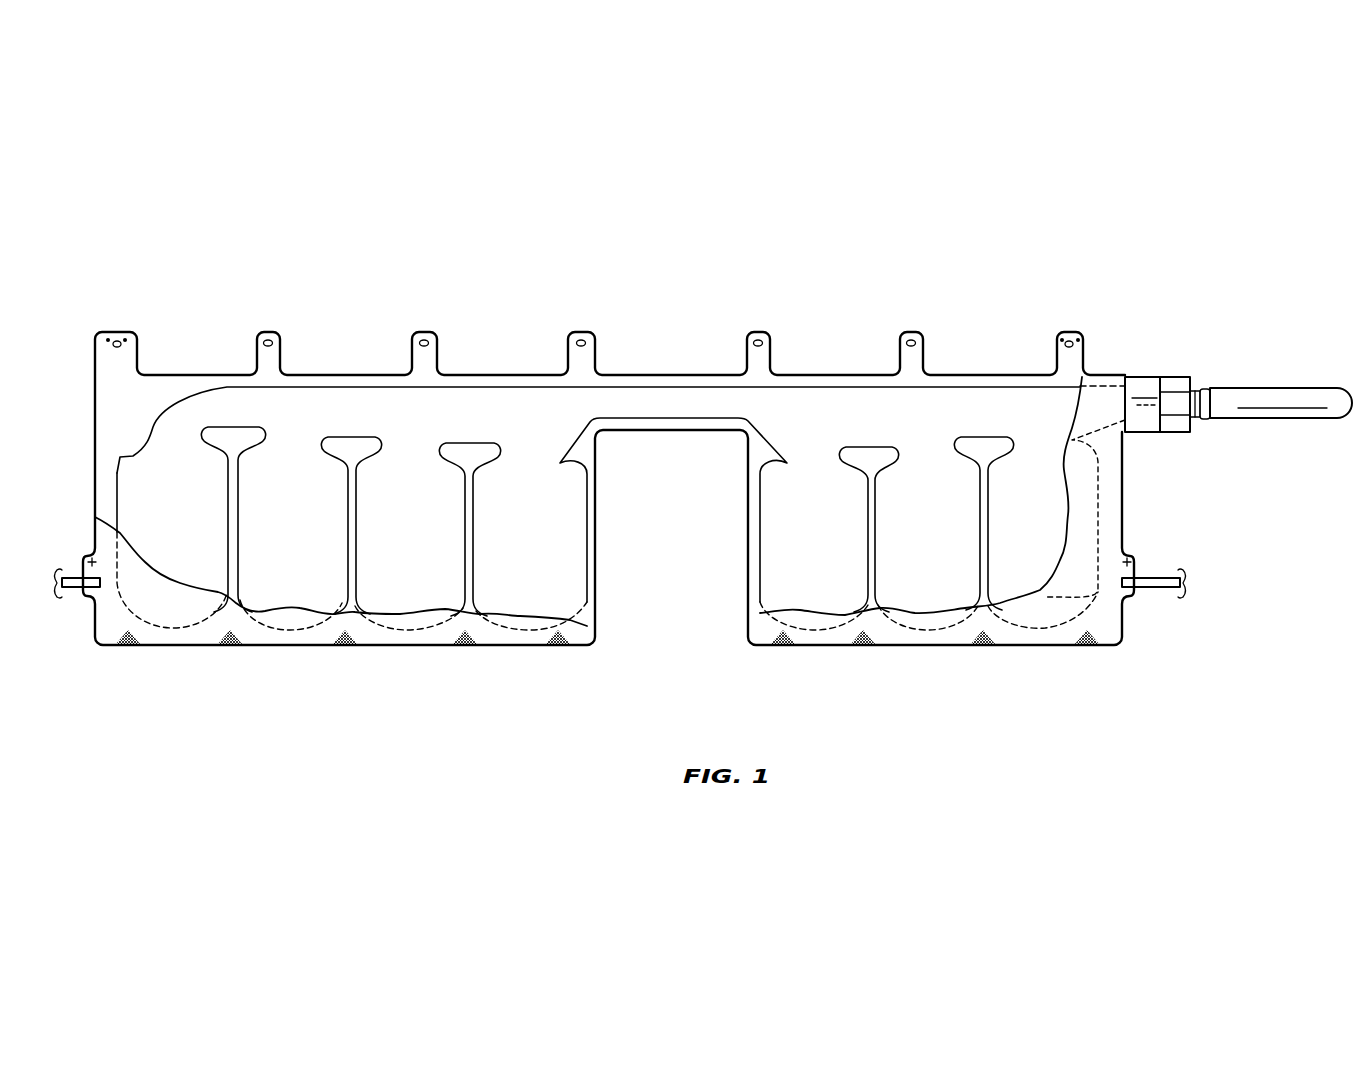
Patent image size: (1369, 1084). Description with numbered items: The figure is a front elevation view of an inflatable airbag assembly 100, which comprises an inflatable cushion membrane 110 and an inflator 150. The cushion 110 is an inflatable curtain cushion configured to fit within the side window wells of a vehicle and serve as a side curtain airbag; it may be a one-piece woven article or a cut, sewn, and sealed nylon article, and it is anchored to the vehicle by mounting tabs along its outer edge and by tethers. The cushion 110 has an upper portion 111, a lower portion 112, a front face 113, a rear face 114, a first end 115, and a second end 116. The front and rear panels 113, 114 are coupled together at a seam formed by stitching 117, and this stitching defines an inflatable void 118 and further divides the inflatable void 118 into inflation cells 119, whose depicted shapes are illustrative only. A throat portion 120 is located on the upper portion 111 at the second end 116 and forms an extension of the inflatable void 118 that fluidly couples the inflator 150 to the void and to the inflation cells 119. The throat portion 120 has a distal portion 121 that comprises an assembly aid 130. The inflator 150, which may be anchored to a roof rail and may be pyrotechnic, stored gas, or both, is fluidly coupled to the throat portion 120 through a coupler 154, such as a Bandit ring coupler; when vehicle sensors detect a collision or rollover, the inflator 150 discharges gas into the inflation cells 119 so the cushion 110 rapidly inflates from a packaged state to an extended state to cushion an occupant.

The airbag assembly 100 is at (830, 245).
The inflatable cushion membrane 110 is at (865, 364).
The upper portion 111 is at (118, 390).
The lower portion 112 is at (108, 632).
The front face 113 is at (1097, 571).
The rear face 114 is at (1047, 533).
The first end 115 is at (102, 423).
The second end 116 is at (1113, 545).
The stitching 117 is at (290, 627).
The inflatable void 118 is at (963, 407).
The inflation cells 119 is at (414, 478).
The throat portion 120 is at (1143, 362).
The distal portion 121 is at (1176, 378).
The assembly aid 130 is at (1145, 427).
The inflator 150 is at (1293, 393).
The coupler 154 is at (1197, 388).